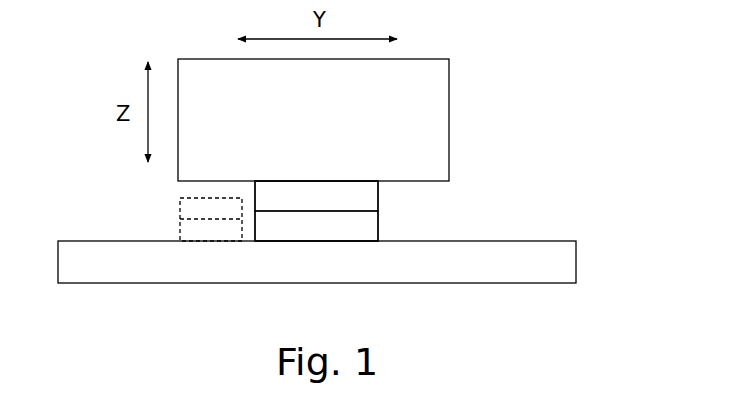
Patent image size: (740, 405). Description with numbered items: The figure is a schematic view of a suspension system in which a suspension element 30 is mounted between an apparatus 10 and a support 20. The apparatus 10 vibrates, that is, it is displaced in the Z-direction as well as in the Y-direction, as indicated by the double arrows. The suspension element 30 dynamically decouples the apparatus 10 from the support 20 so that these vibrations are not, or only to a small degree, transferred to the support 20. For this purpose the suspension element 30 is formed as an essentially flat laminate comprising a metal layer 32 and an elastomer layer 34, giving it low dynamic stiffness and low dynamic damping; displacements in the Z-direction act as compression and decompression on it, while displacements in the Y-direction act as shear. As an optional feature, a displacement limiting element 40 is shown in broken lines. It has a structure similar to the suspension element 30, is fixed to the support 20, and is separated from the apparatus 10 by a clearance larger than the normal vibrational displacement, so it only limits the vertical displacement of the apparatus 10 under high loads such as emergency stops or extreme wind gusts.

The apparatus 10 is at (451, 89).
The support 20 is at (547, 240).
The suspension element 30 is at (339, 243).
The metal layer 32 is at (379, 230).
The elastomer layer 34 is at (379, 200).
The displacement limiting element 40 is at (172, 220).